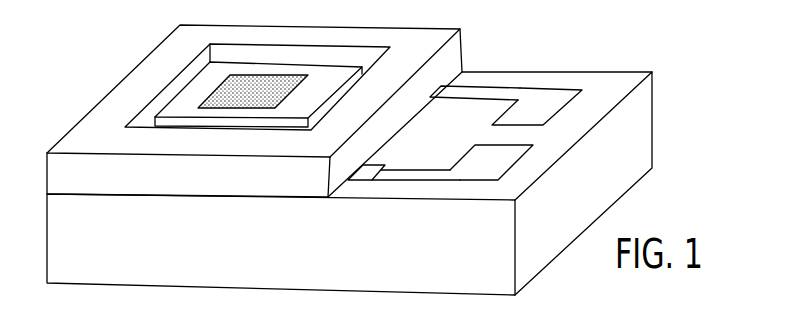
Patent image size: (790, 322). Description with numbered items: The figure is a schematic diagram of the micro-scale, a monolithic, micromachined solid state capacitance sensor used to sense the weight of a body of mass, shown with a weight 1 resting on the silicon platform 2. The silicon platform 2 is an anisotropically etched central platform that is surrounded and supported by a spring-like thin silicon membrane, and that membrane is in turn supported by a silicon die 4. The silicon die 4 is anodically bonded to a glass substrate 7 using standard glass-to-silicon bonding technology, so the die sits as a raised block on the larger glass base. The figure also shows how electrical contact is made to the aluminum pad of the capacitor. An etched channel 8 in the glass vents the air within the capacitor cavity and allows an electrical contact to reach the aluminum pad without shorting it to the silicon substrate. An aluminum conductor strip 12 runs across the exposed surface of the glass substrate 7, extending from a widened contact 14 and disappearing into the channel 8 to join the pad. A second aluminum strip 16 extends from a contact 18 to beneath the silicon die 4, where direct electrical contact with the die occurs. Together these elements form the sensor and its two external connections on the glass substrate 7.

The weight 1 is at (267, 92).
The silicon platform 2 is at (316, 94).
The silicon die 4 is at (418, 57).
The glass substrate 7 is at (607, 92).
The etched channel 8 is at (365, 167).
The aluminum conductor strip 12 is at (419, 174).
The widened contact 14 is at (500, 162).
The aluminum strip 16 is at (497, 92).
The contact 18 is at (540, 108).